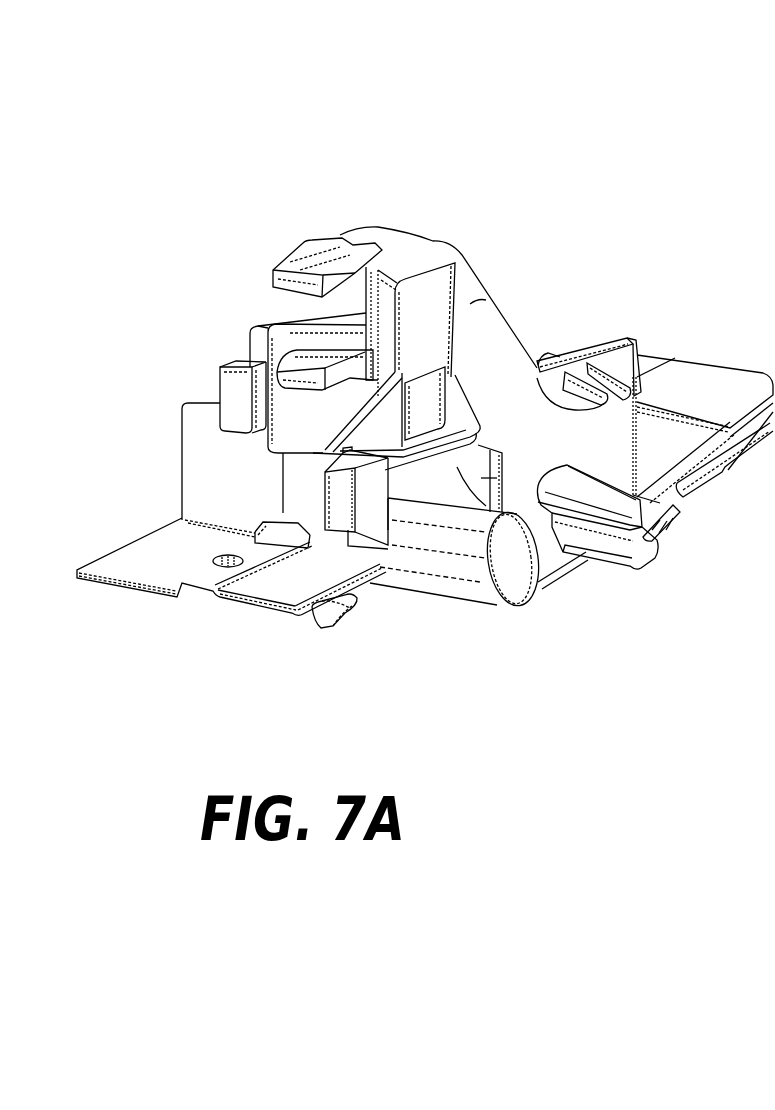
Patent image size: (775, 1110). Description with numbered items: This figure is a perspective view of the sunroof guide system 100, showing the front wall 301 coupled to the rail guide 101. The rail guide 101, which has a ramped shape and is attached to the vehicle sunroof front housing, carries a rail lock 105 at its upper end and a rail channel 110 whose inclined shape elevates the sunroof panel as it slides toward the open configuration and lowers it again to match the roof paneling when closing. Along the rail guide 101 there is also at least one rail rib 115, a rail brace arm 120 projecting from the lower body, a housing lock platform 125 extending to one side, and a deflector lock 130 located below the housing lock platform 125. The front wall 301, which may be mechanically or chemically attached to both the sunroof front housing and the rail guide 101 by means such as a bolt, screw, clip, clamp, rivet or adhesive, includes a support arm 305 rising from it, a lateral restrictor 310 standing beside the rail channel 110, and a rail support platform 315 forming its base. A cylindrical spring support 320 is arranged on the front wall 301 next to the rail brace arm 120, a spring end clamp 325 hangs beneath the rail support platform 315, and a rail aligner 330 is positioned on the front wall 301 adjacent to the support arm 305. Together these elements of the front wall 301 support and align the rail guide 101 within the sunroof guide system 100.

The sunroof guide system 100 is at (138, 150).
The rail guide 101 is at (477, 303).
The rail lock 105 is at (311, 240).
The rail channel 110 is at (355, 327).
The rail rib 115 is at (612, 341).
The rail brace arm 120 is at (358, 515).
The housing lock platform 125 is at (725, 377).
The deflector lock 130 is at (650, 572).
The front wall 301 is at (195, 463).
The support arm 305 is at (273, 402).
The lateral restrictor 310 is at (432, 280).
The rail support platform 315 is at (132, 563).
The spring support 320 is at (517, 580).
The spring end clamp 325 is at (329, 630).
The rail aligner 330 is at (232, 385).